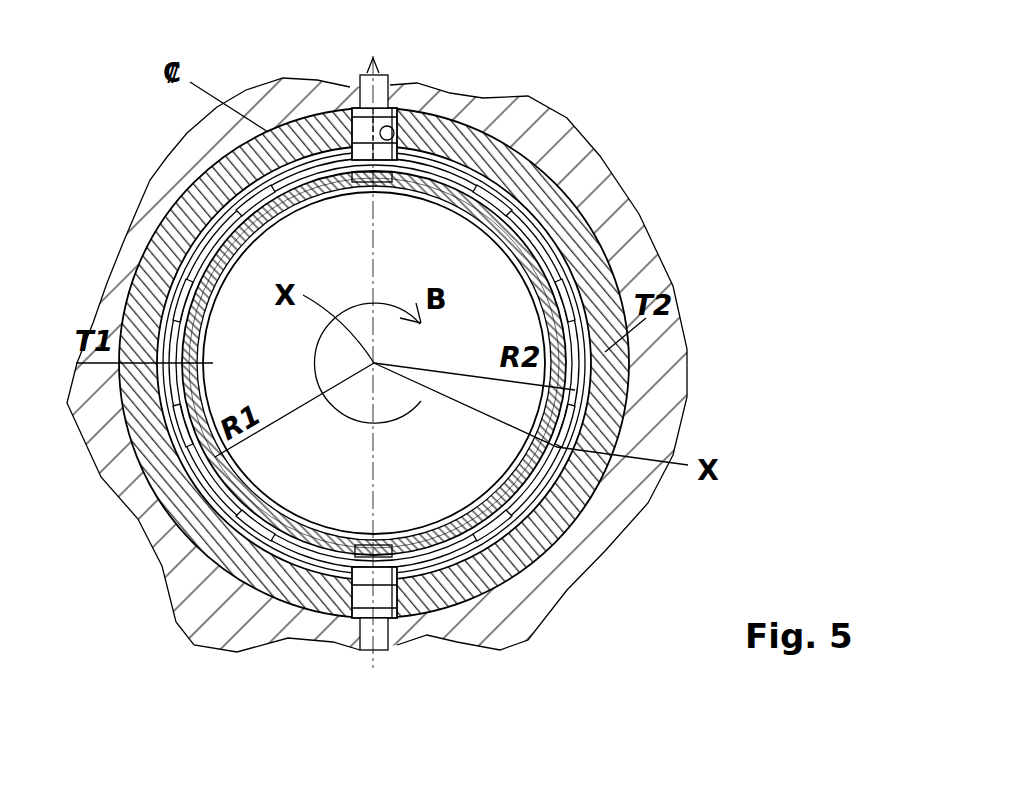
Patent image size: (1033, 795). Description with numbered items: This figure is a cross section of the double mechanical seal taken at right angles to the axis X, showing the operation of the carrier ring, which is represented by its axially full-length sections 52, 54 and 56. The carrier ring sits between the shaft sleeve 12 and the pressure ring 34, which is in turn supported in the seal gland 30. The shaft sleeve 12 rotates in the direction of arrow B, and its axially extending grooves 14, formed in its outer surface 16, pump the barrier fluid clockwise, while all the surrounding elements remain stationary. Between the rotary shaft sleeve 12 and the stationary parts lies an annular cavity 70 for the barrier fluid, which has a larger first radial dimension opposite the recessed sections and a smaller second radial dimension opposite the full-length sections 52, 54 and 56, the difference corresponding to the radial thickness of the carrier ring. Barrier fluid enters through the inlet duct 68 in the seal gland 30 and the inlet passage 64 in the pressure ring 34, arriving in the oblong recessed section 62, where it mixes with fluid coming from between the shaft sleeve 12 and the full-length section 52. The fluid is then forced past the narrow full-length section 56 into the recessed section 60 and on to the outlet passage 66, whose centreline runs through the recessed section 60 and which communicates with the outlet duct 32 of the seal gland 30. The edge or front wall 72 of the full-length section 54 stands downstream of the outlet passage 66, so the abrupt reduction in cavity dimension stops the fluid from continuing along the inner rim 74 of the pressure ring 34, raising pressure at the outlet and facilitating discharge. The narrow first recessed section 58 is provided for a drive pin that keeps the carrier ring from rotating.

The shaft sleeve 12 is at (570, 478).
The axially extending grooves 14 is at (573, 416).
The outer surface 16 is at (520, 578).
The seal gland 30 is at (514, 115).
The barrier fluid outlet duct 32 is at (386, 97).
The pressure ring 34 is at (605, 345).
The axially full-length section 52 is at (575, 262).
The axially full-length section 54 is at (540, 143).
The axially full-length section 56 is at (190, 256).
The first axially recessed section 58 is at (545, 178).
The second recessed section 60 is at (218, 161).
The third recessed section 62 is at (226, 516).
The inlet passage 64 is at (358, 620).
The outlet passage 66 is at (373, 257).
The inlet duct 68 is at (398, 648).
The annular cavity 70 is at (560, 222).
The edge or front wall 72 is at (362, 130).
The inner rim 74 is at (166, 316).